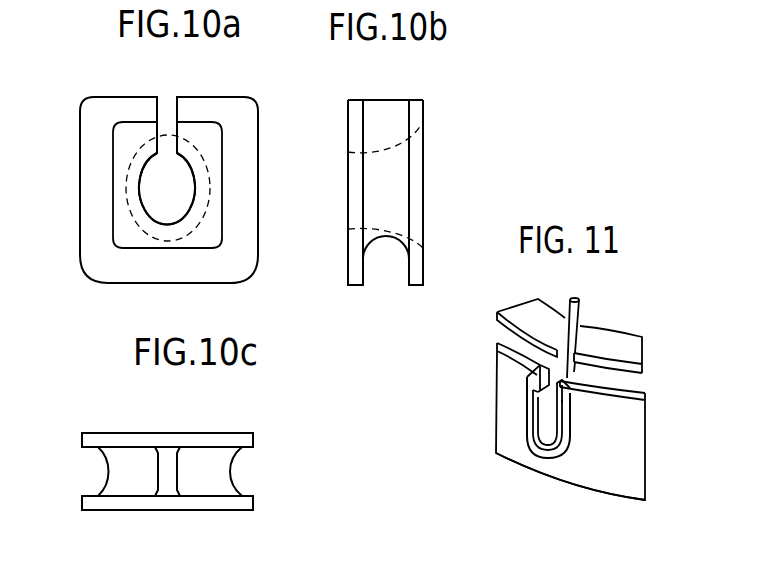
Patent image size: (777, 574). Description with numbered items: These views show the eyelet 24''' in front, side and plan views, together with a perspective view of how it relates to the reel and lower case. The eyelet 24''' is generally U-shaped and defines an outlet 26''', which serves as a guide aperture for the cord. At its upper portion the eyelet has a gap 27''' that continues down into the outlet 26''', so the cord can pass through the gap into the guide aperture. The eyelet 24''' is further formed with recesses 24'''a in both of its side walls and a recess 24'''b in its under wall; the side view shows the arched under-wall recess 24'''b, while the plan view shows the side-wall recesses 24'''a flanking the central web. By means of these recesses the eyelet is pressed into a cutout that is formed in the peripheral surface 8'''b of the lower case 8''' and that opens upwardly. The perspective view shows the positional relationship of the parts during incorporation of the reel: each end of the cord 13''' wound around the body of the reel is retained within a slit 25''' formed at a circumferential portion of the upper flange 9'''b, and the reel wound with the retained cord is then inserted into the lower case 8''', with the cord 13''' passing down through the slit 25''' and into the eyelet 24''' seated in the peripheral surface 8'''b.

In FIG. 10a, the eyelet 24''' is at (204, 190).
In FIG. 10b, the eyelet 24''' is at (424, 192).
In FIG. 10c, the eyelet 24''' is at (188, 443).
In FIG. 11, the eyelet 24''' is at (501, 419).
In FIG. 10a, the outlet 26''' is at (106, 189).
In FIG. 10b, the outlet 26''' is at (423, 185).
In FIG. 11, the outlet 26''' is at (519, 458).
In FIG. 10a, the gap 27''' is at (137, 100).
In FIG. 10c, the gap 27''' is at (145, 442).
In FIG. 11, the gap 27''' is at (495, 379).
In FIG. 10c, the recesses 24'''a is at (179, 471).
In FIG. 10b, the recess 24'''b is at (406, 292).
In FIG. 11, the cord 13''' is at (622, 328).
In FIG. 11, the slit 25''' is at (607, 328).
In FIG. 11, the upper flange 9'''b is at (646, 363).
In FIG. 11, the lower case 8''' is at (605, 421).
In FIG. 11, the peripheral surface 8'''b is at (570, 504).